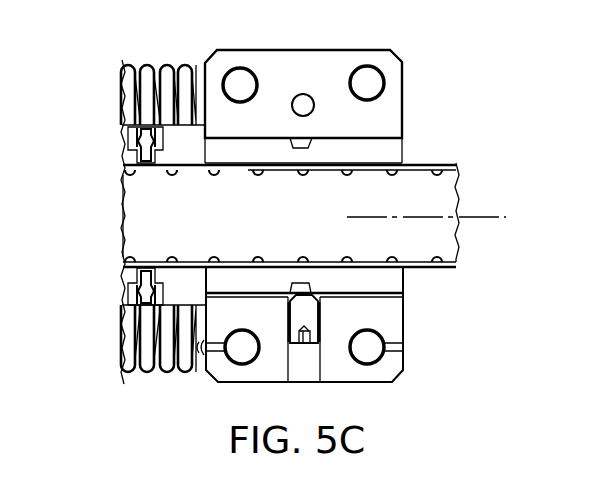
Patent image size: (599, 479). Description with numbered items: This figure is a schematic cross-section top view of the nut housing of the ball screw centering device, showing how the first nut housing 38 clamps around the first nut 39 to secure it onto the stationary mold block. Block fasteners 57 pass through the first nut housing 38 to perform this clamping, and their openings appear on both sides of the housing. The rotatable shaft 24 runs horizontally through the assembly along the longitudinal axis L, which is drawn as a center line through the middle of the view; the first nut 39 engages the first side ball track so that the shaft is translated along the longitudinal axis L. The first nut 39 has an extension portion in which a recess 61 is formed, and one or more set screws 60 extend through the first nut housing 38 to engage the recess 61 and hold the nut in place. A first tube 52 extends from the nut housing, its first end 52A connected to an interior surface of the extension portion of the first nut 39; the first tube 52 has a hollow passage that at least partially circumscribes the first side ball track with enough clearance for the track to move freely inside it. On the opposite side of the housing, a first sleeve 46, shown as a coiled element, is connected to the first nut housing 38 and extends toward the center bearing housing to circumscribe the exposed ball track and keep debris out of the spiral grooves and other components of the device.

The rotatable shaft 24 is at (133, 222).
The first nut housing 38 is at (296, 58).
The first nut 39 is at (395, 147).
The first sleeve 46 is at (143, 63).
The first tube 52 is at (445, 164).
The first end 52A is at (247, 170).
The block fasteners 57 is at (238, 78).
The set screws 60 is at (297, 330).
The recess 61 is at (305, 283).
The longitudinal axis L is at (497, 217).